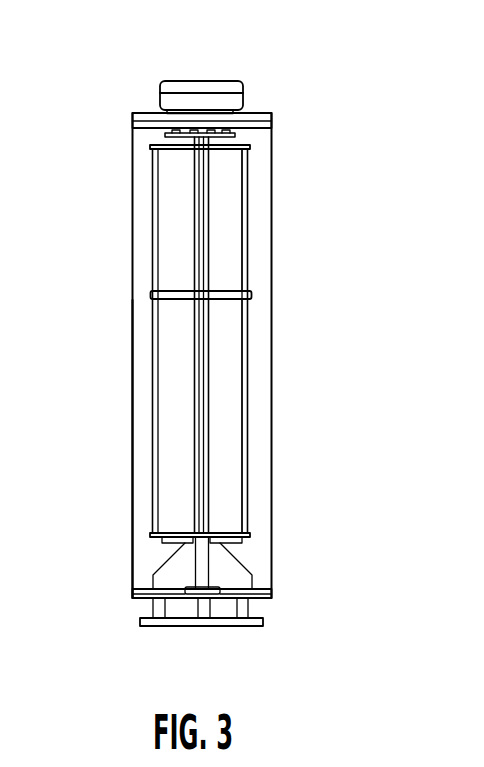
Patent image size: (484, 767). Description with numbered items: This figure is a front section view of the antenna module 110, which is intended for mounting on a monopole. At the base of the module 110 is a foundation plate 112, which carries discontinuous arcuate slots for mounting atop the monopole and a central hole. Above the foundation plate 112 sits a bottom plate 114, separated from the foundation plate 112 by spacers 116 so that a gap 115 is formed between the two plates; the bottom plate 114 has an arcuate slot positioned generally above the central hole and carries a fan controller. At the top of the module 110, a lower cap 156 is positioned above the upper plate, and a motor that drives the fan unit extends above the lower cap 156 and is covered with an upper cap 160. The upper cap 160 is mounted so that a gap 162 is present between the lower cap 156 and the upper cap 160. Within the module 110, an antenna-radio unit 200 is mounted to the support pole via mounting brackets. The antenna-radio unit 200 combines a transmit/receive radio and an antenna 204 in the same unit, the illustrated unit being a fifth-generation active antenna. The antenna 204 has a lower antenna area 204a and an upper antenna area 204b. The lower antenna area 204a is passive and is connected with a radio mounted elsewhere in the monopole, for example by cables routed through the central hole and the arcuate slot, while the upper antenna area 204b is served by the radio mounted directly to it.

The antenna module 110 is at (326, 158).
The foundation plate 112 is at (198, 627).
The bottom plate 114 is at (147, 601).
The gap 115 is at (278, 602).
The spacers 116 is at (166, 607).
The lower cap 156 is at (141, 120).
The upper cap 160 is at (238, 82).
The gap 162 is at (248, 103).
The antenna-radio unit 200 is at (143, 453).
The antenna 204 is at (143, 312).
The lower antenna area 204a is at (233, 397).
The upper antenna area 204b is at (233, 233).